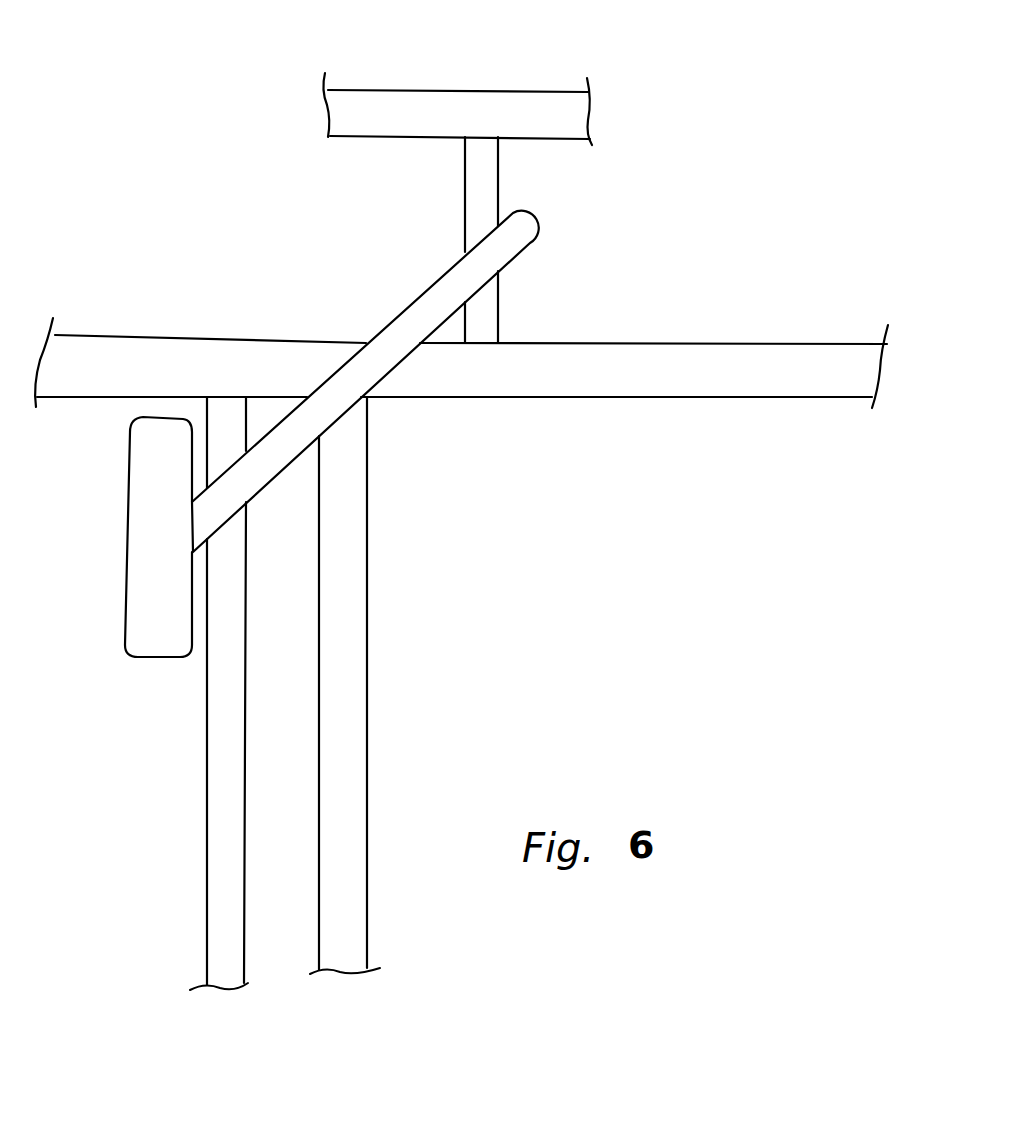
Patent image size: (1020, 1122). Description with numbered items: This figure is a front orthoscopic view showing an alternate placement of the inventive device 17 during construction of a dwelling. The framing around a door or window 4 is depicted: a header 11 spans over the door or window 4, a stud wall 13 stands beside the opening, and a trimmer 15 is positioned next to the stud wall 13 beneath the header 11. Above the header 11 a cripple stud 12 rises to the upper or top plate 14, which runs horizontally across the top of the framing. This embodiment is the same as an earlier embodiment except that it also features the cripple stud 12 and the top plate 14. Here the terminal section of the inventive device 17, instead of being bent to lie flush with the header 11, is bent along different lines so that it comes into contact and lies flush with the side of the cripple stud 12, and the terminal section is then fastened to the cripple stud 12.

The door or window 4 is at (487, 502).
The header over door or window 11 is at (700, 373).
The cripple stud 12 is at (485, 174).
The stud wall 13 is at (222, 840).
The upper or top plate 14 is at (400, 107).
The trimmer 15 is at (357, 778).
The inventive device 17 is at (457, 285).